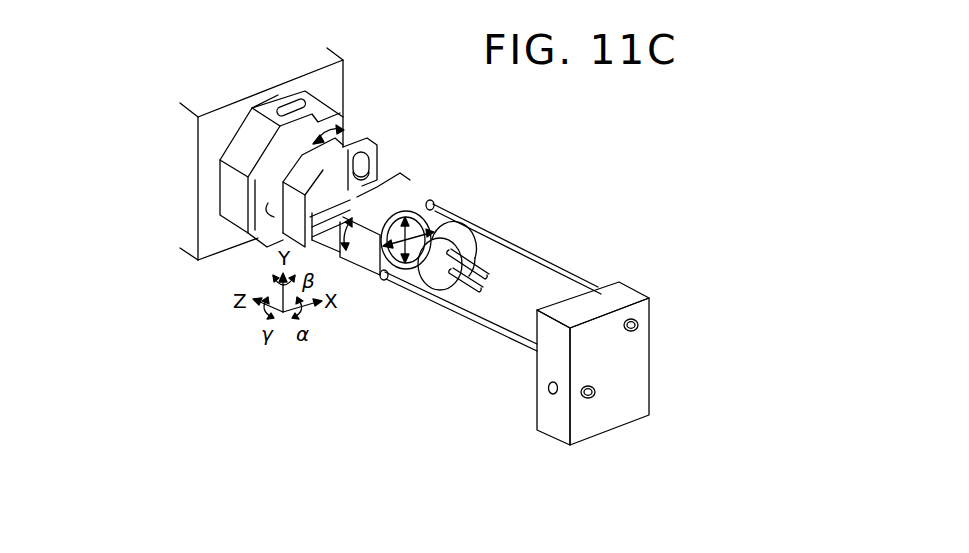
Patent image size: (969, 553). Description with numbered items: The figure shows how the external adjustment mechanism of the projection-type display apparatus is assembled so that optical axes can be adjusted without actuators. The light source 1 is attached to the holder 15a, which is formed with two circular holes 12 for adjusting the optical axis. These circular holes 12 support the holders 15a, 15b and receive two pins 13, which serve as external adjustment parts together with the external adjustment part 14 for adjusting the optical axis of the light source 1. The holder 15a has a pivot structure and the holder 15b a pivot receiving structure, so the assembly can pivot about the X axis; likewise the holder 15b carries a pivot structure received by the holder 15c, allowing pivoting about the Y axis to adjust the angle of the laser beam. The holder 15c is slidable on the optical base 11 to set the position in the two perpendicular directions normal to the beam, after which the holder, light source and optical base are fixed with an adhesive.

The optical base 11 is at (336, 61).
The holder 15c is at (333, 112).
The holder 15b is at (380, 153).
The holder 15a is at (408, 180).
The circular holes 12 is at (433, 203).
The light source 1 is at (456, 243).
The pins 13 is at (556, 279).
The external adjustment part 14 is at (618, 288).